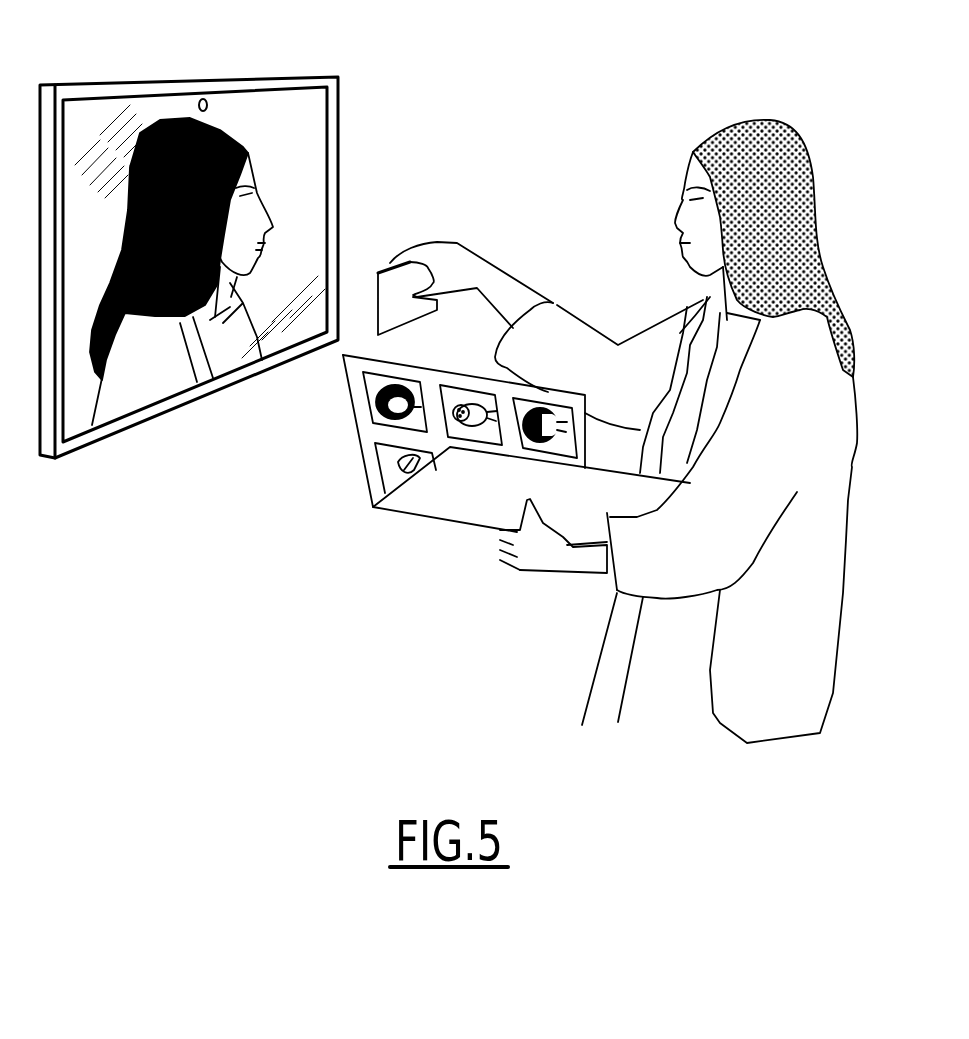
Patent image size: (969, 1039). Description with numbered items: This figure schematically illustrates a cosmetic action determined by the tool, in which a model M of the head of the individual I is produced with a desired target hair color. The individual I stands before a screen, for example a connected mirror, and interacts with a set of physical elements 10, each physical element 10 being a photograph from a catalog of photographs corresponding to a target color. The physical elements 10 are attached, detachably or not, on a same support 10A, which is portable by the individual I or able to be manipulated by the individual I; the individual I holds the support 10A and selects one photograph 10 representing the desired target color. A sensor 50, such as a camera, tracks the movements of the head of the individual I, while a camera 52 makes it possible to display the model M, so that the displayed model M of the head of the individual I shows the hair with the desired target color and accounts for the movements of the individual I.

The sensor 50 is at (206, 103).
The camera 52 is at (307, 140).
The model M is at (148, 383).
The individual I is at (827, 457).
The physical element 10 is at (390, 290).
The support 10A is at (440, 487).